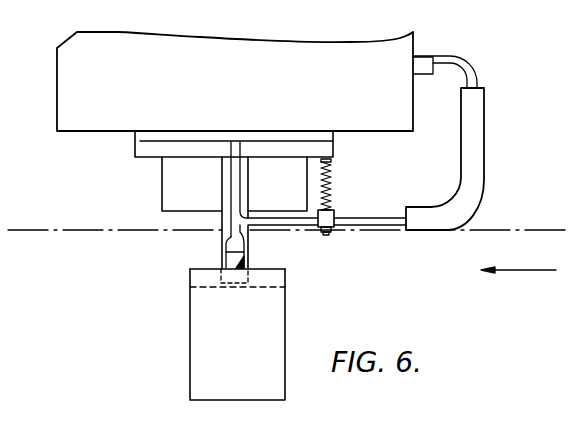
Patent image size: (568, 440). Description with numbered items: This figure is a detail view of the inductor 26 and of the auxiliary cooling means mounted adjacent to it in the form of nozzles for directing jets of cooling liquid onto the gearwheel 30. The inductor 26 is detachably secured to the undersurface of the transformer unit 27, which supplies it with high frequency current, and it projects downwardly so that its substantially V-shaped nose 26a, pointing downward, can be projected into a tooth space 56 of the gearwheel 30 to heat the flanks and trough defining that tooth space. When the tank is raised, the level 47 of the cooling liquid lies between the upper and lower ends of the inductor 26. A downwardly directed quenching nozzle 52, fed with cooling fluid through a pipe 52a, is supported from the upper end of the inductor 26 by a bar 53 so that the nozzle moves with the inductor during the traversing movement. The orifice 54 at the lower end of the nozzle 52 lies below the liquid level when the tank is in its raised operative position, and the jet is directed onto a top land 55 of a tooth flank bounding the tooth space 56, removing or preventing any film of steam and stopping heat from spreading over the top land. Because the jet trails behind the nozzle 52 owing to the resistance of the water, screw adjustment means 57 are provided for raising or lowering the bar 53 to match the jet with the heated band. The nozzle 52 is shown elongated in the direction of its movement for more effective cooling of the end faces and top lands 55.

The transformer unit 27 is at (60, 103).
The inductor 26 is at (225, 167).
The nose of the inductor 26a is at (243, 284).
The gearwheel 30 is at (197, 345).
The level of cooling liquid 47 is at (72, 232).
The nozzle 52 is at (231, 253).
The pipe 52a is at (479, 83).
The bar 53 is at (334, 217).
The orifice 54 is at (245, 259).
The top land 55 is at (270, 268).
The tooth space 56 is at (190, 279).
The screw adjustment means 57 is at (331, 181).